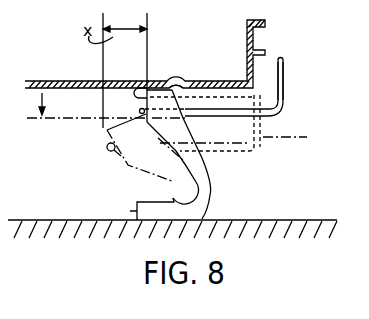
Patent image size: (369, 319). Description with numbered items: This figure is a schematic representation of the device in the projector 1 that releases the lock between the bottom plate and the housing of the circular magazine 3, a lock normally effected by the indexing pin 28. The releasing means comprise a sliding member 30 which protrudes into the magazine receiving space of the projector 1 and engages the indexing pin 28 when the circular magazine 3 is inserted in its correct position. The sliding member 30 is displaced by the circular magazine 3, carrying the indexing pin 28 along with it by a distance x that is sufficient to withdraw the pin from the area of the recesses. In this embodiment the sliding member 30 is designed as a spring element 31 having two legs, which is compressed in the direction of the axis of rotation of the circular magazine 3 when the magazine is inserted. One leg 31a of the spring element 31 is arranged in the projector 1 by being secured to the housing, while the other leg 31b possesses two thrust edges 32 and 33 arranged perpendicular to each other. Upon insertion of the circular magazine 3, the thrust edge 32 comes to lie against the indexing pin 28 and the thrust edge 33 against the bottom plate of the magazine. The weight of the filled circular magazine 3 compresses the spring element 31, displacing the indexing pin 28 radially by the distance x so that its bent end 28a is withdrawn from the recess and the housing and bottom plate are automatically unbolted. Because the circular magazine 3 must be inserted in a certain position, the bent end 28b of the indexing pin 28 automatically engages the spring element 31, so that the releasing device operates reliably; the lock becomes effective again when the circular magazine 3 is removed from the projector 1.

The projector 1 is at (291, 219).
The circular magazine 3 is at (197, 34).
The indexing pin 28 is at (287, 119).
The bent end of the indexing pin 28a is at (285, 72).
The bent end of the indexing pin 28b is at (139, 110).
The sliding member 30 is at (209, 173).
The spring element 31 is at (198, 132).
The leg of the spring element 31a is at (131, 211).
The leg of the spring element 31b is at (197, 80).
The thrust edge 32 is at (139, 80).
The thrust edge 33 is at (150, 80).